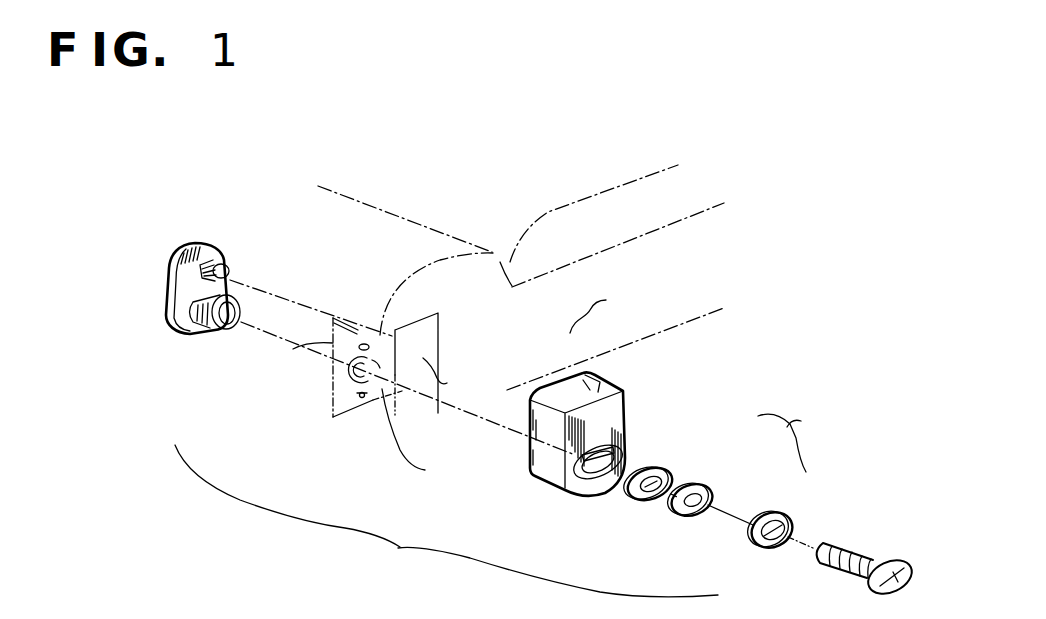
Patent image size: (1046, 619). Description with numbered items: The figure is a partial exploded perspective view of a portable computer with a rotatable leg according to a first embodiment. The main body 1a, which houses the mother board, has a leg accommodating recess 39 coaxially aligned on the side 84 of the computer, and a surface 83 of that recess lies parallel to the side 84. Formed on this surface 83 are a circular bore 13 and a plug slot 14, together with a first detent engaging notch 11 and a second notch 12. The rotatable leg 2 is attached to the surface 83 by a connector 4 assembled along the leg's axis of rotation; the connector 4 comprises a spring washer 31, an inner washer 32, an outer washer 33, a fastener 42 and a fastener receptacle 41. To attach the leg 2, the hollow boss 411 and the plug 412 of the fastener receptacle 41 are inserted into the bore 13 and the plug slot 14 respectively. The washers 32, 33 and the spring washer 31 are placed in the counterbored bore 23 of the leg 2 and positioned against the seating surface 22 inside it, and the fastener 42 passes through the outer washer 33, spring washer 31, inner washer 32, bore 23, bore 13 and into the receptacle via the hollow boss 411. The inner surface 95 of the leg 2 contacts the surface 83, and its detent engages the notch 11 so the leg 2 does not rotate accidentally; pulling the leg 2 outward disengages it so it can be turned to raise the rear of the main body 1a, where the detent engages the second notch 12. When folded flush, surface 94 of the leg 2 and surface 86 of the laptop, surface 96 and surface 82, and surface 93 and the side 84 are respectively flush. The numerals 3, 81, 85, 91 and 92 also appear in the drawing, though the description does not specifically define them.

The main body 1a is at (677, 325).
The rotatable leg 2 is at (558, 392).
The fastening washer assembly 3 is at (788, 440).
The connector 4 is at (400, 547).
The first detent engaging notch 11 is at (362, 398).
The second notch 12 is at (343, 367).
The circular bore 13 is at (448, 352).
The plug slot 14 is at (351, 326).
The seating surface 22 is at (610, 456).
The counterbored bore 23 is at (610, 440).
The spring washer 31 is at (708, 487).
The inner washer 32 is at (667, 472).
The outer washer 33 is at (788, 512).
The leg accommodating recess 39 is at (415, 441).
The fastener receptacle 41 is at (172, 334).
The fastener 42 is at (867, 572).
The spring plate 81 is at (405, 323).
The surface of the laptop 82 is at (405, 400).
The surface of the leg accommodating recess 83 is at (309, 364).
The side of the portable computer 84 is at (600, 309).
The spring arm 85 is at (452, 375).
The surface of the laptop 86 is at (252, 355).
The notch of holder 91 is at (603, 376).
The side surface of holder 92 is at (620, 440).
The surface of leg 93 is at (572, 480).
The surface of leg 94 is at (538, 457).
The inner surface of the leg 95 is at (531, 422).
The surface of leg 96 is at (598, 493).
The hollow boss 411 is at (206, 332).
The plug 412 is at (227, 274).